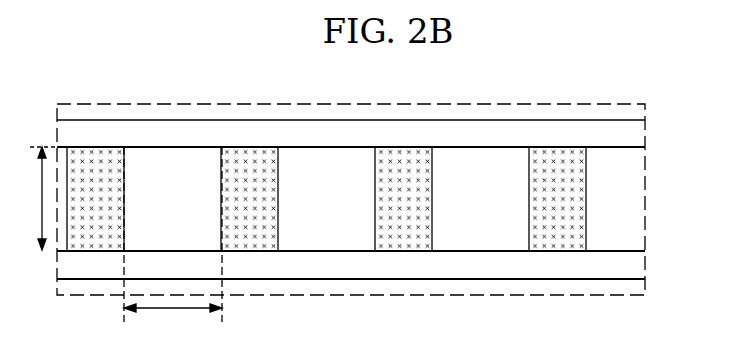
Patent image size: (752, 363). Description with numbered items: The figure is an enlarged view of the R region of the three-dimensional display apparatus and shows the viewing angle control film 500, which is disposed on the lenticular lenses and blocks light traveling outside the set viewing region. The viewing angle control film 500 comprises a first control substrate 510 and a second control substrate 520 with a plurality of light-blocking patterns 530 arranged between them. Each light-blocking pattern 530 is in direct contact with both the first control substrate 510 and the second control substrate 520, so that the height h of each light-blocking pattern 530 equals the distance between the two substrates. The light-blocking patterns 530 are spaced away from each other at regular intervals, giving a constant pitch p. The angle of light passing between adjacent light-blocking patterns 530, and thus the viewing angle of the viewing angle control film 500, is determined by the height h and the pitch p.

The viewing angle control film 500 is at (698, 138).
The first control substrate 510 is at (636, 264).
The second control substrate 520 is at (636, 131).
The light-blocking patterns 530 is at (593, 192).
The R region R is at (98, 104).
The height h is at (40, 198).
The pitch p is at (173, 242).